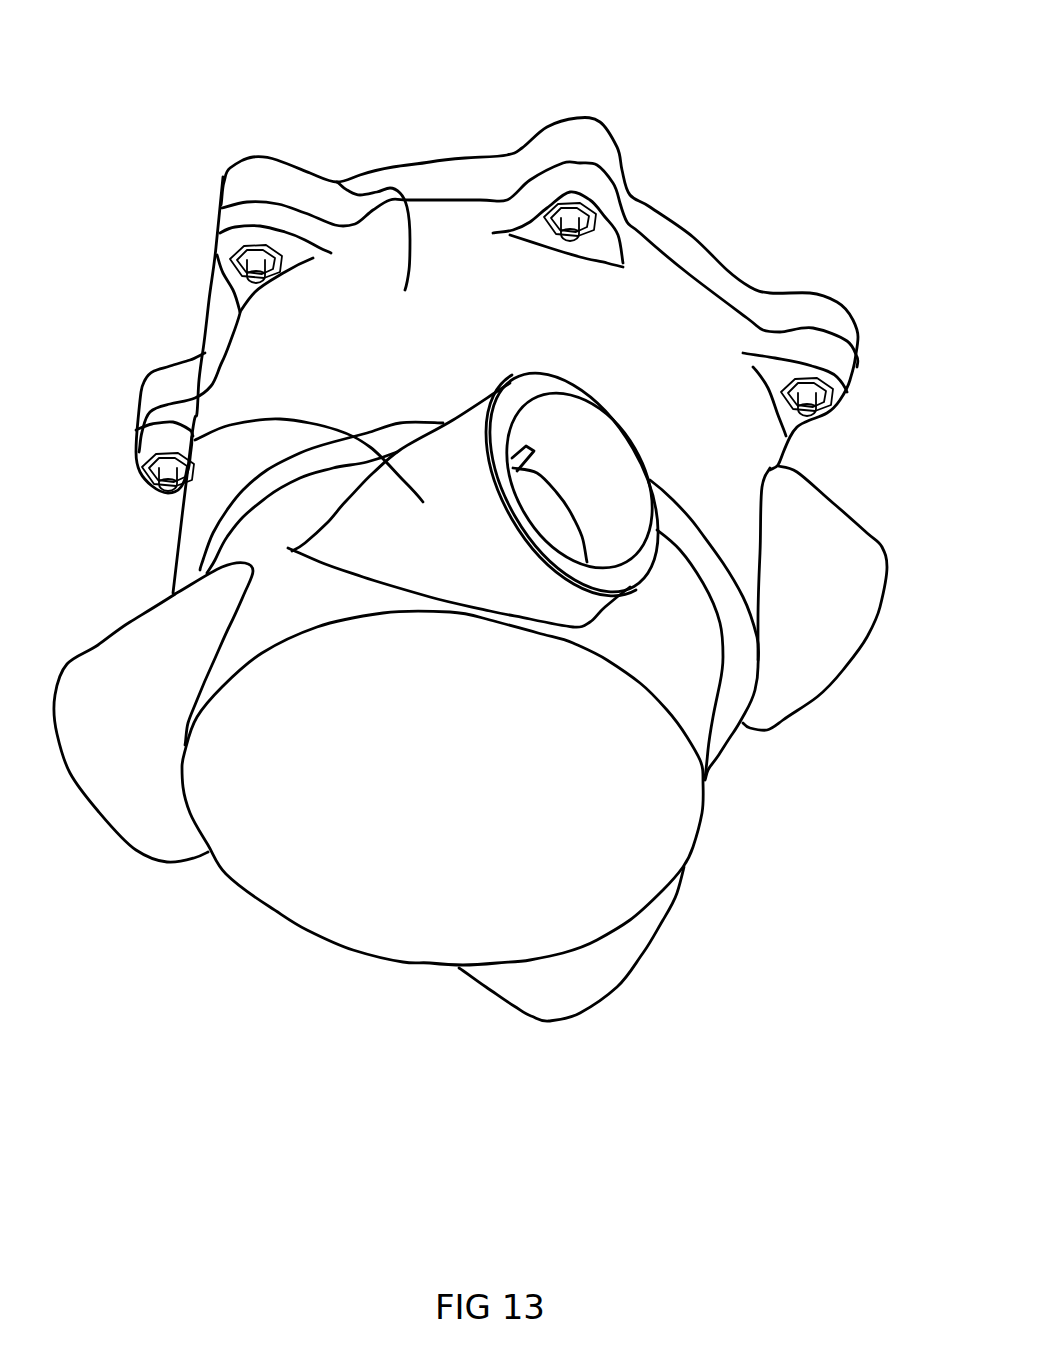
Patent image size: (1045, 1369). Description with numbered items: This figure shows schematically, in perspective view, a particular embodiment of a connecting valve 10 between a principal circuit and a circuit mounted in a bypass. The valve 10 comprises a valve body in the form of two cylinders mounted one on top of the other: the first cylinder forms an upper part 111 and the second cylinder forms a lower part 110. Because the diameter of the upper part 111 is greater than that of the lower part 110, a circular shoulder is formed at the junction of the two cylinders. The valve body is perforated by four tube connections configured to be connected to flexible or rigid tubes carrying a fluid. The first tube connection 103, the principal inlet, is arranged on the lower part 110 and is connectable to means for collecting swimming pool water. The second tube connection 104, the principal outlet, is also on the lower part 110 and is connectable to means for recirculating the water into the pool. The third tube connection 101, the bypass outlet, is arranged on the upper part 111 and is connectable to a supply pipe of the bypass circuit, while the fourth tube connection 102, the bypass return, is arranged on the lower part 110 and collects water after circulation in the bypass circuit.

The connecting valve 10 is at (723, 218).
The upper part 111 is at (337, 182).
The first tube connection 103 is at (140, 432).
The third tube connection 101 is at (797, 670).
The fourth tube connection 102 is at (598, 968).
The second tube connection 104 is at (114, 753).
The lower part 110 is at (327, 908).